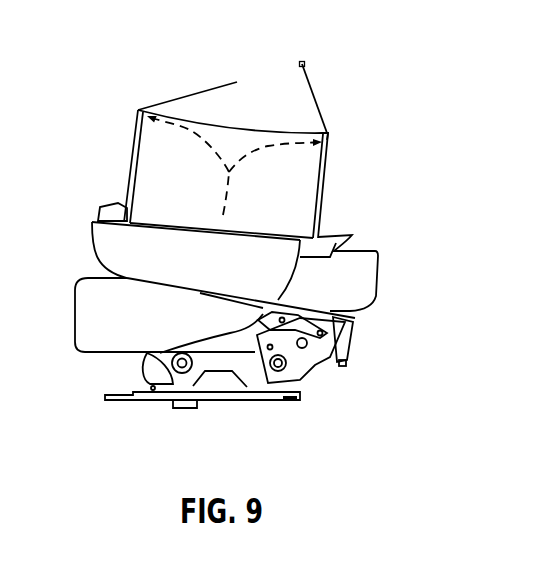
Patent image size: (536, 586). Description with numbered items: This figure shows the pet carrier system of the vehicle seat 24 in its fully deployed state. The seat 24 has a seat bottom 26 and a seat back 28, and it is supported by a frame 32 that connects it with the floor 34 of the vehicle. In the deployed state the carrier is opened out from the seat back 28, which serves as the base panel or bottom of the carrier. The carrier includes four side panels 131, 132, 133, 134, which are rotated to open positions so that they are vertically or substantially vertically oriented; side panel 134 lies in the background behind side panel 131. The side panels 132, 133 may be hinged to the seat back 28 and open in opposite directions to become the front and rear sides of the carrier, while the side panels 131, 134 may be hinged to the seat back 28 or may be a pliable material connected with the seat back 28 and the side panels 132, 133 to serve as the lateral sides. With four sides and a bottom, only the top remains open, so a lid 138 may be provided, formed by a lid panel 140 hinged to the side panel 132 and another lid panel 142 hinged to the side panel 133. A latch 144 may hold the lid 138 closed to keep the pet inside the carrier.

The seat 24 is at (371, 158).
The seat bottom 26 is at (158, 334).
The seat back 28 is at (225, 274).
The frame 32 is at (312, 372).
The floor 34 is at (122, 394).
The side panel 131 is at (197, 200).
The side panel 132 is at (133, 158).
The side panel 133 is at (318, 210).
The side panel 134 is at (236, 122).
The lid 138 is at (337, 127).
The lid panel 140 is at (200, 92).
The lid panel 142 is at (316, 97).
The latch 144 is at (305, 62).